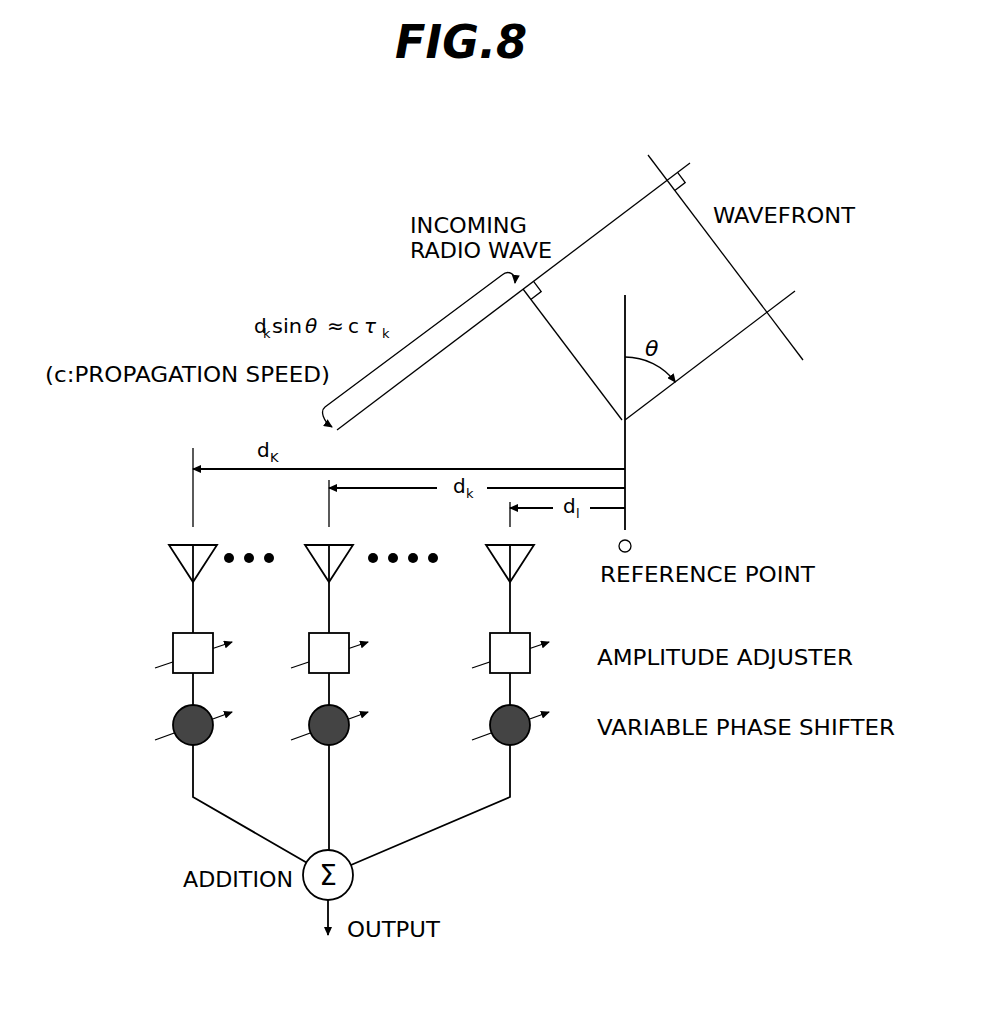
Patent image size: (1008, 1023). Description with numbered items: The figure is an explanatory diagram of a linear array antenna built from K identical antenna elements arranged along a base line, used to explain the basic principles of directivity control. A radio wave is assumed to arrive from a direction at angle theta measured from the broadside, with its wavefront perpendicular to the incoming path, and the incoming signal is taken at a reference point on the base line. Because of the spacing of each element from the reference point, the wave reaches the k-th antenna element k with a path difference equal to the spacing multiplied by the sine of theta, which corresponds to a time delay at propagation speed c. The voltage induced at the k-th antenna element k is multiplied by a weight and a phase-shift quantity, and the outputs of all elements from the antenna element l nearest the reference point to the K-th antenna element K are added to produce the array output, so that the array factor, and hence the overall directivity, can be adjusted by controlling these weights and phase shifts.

The K-th antenna element K is at (220, 704).
The k-th antenna element k is at (339, 697).
The antenna element l is at (462, 705).